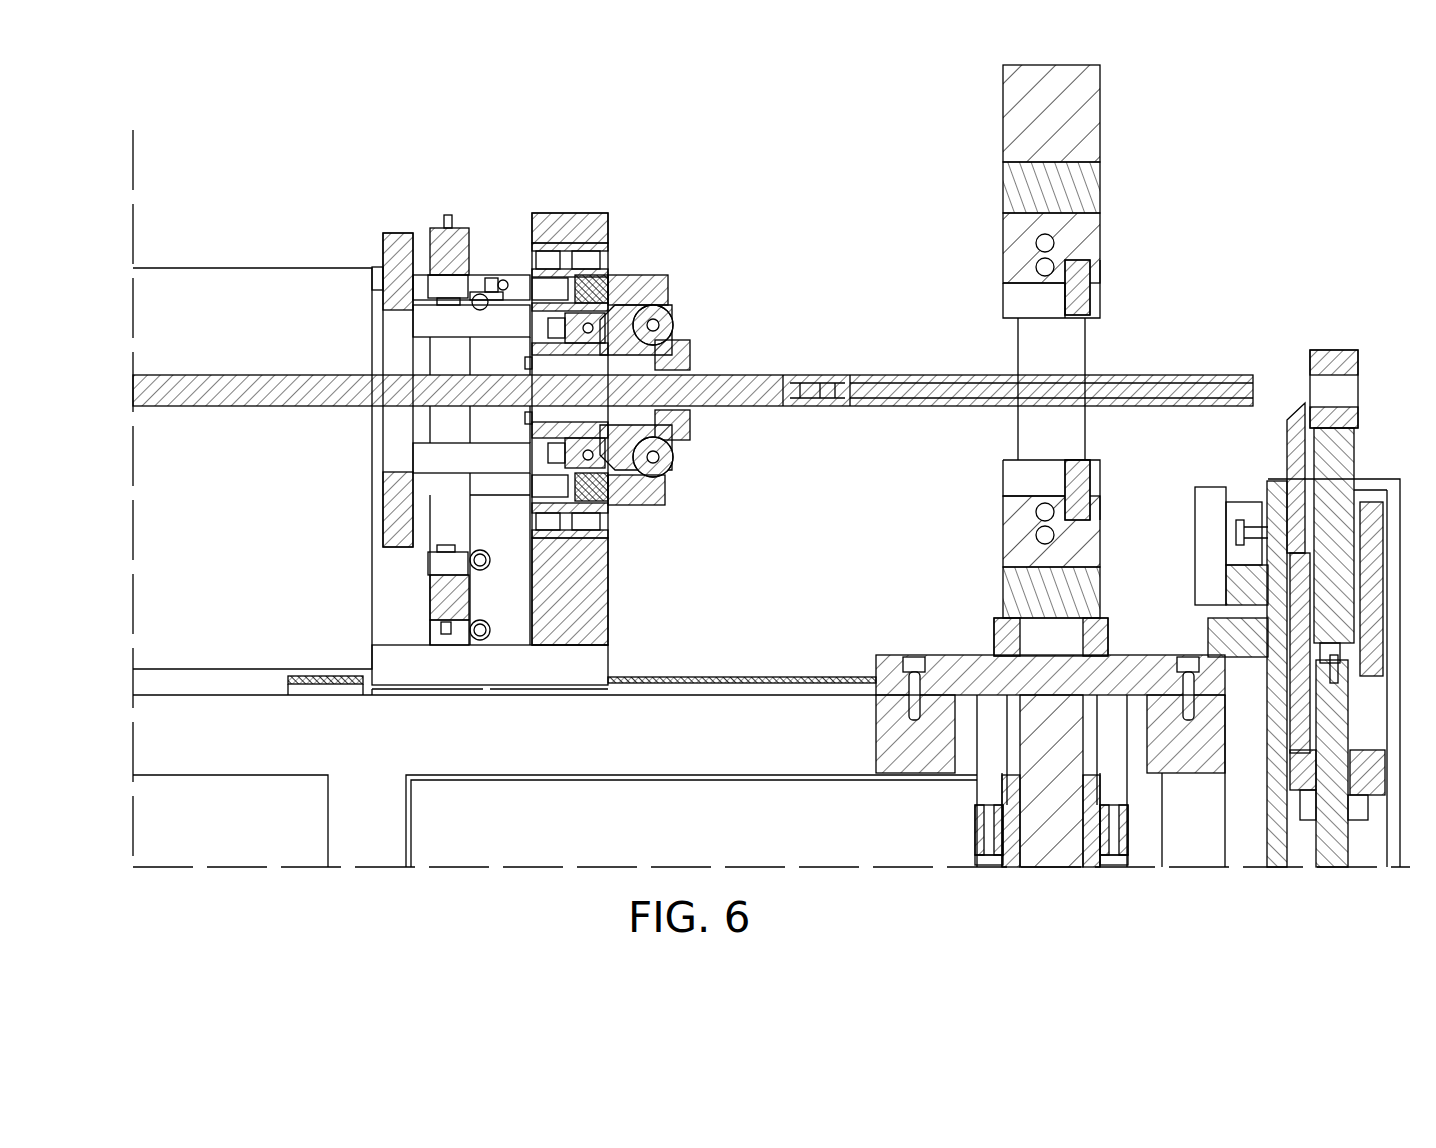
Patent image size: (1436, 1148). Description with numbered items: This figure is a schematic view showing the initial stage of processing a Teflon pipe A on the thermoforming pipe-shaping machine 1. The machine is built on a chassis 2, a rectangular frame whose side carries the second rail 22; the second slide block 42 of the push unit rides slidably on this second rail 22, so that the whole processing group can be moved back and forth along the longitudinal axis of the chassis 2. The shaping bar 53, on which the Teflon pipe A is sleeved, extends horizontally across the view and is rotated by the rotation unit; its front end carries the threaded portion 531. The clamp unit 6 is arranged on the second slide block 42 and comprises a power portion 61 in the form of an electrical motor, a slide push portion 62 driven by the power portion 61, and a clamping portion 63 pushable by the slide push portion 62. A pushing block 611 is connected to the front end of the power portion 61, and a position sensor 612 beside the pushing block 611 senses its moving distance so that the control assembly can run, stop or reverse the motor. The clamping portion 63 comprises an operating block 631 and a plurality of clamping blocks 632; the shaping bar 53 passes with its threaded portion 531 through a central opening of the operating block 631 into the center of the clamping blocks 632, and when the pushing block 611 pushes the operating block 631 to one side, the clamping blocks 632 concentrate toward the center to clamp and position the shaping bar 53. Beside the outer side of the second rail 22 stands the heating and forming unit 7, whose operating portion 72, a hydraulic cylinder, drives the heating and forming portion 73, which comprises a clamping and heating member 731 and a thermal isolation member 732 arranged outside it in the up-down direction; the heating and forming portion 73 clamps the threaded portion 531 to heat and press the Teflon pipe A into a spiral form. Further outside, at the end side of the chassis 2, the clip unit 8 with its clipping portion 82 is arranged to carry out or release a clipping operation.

The thermoforming pipe-shaping machine 1 is at (782, 466).
The chassis 2 is at (718, 757).
The second rail 22 is at (288, 684).
The second slide block 42 is at (547, 672).
The shaping bar 53 is at (693, 315).
The threaded portion 531 is at (935, 375).
The Teflon pipe A is at (783, 375).
The clamp unit 6 is at (447, 382).
The power portion 61 is at (290, 285).
The pushing block 611 is at (425, 277).
The position sensor 612 is at (495, 275).
The slide push portion 62 is at (436, 228).
The clamping portion 63 is at (643, 407).
The operating block 631 is at (390, 237).
The clamping blocks 632 is at (655, 312).
The heating and forming unit 7 is at (1076, 419).
The operating portion 72 is at (1100, 130).
The heating and forming portion 73 is at (1118, 386).
The clamping and heating member 731 is at (1100, 227).
The thermal isolation member 732 is at (1100, 187).
The clip unit 8 is at (1303, 564).
The clipping portion 82 is at (1373, 350).